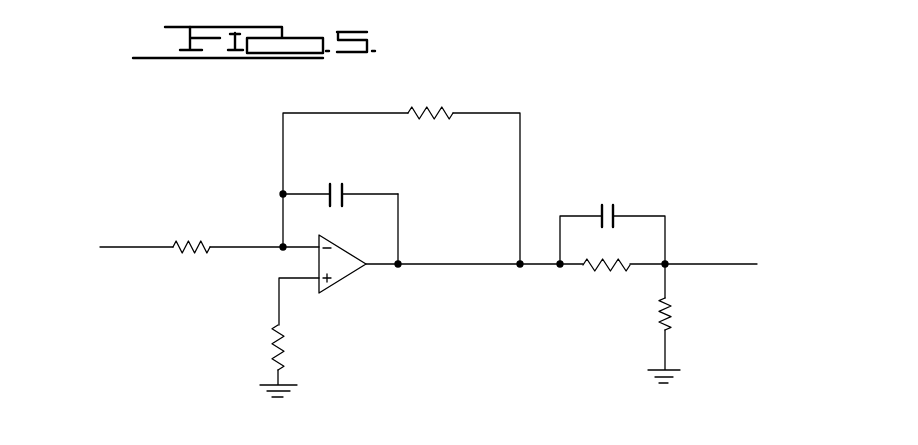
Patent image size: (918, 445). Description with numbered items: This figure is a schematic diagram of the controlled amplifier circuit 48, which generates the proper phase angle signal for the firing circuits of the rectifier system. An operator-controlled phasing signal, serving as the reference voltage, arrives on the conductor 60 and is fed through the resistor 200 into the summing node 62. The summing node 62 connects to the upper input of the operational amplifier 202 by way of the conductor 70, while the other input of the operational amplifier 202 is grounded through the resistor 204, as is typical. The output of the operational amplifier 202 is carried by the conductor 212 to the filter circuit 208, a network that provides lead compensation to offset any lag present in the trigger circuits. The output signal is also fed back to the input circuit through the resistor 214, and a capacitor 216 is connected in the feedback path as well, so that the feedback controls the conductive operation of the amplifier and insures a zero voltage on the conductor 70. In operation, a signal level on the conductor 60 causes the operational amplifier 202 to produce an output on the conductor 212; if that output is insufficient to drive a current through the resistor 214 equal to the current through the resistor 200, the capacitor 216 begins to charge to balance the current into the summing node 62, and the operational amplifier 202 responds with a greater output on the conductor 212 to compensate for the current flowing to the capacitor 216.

The controlled amplifier circuit 48 is at (117, 168).
The conductor 60 is at (115, 248).
The resistor 200 is at (182, 243).
The summing node 62 is at (282, 250).
The conductor 70 is at (299, 245).
The operational amplifier 202 is at (348, 277).
The resistor 204 is at (273, 343).
The capacitor 216 is at (337, 182).
The resistor 214 is at (433, 105).
The conductor 212 is at (505, 270).
The filter circuit 208 is at (627, 203).